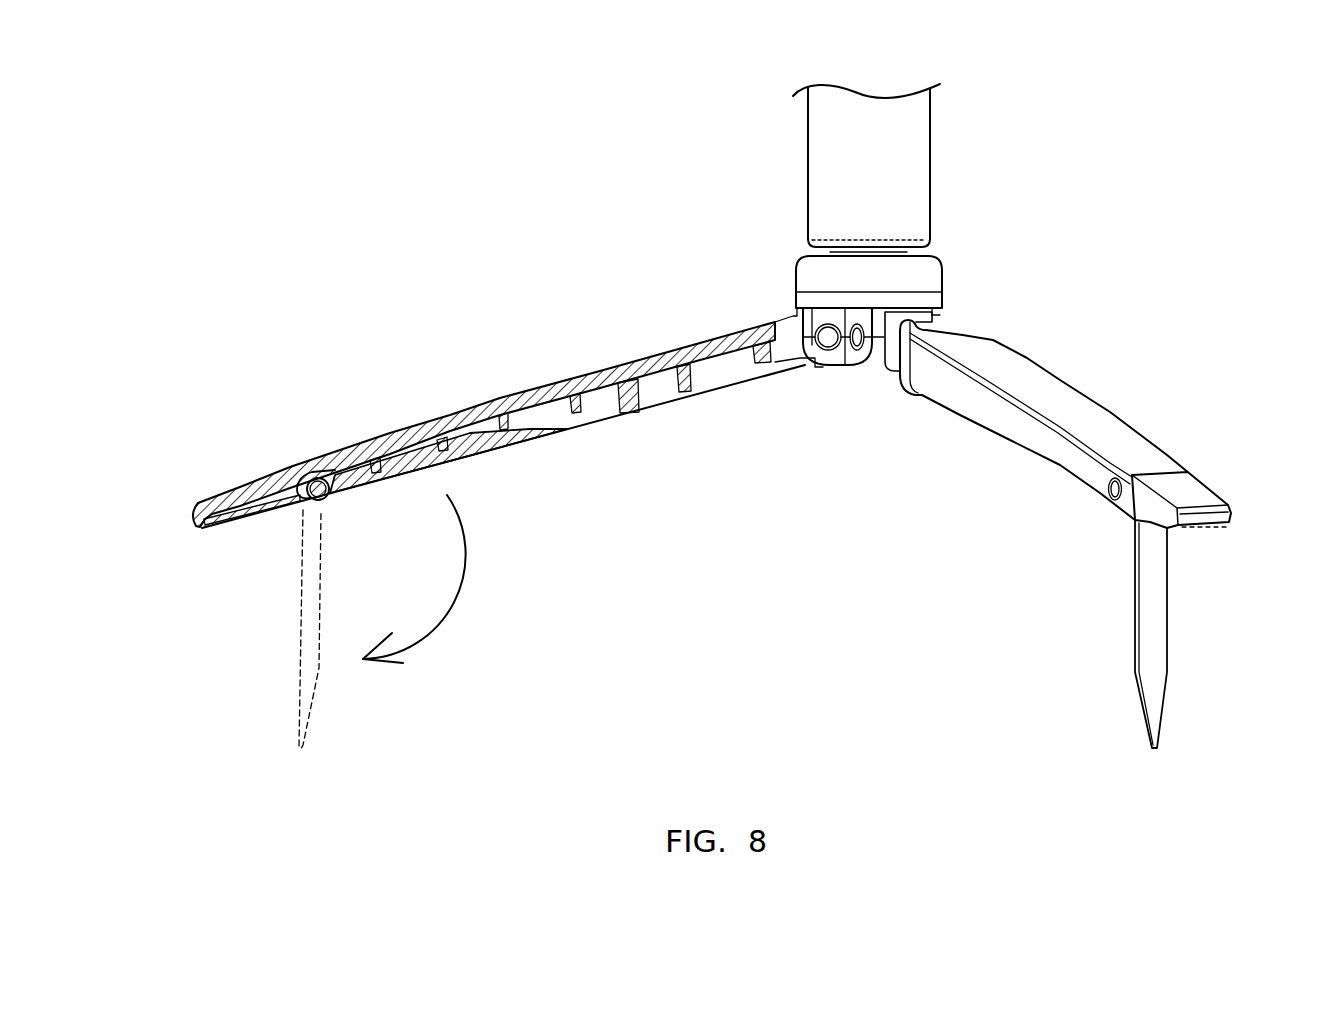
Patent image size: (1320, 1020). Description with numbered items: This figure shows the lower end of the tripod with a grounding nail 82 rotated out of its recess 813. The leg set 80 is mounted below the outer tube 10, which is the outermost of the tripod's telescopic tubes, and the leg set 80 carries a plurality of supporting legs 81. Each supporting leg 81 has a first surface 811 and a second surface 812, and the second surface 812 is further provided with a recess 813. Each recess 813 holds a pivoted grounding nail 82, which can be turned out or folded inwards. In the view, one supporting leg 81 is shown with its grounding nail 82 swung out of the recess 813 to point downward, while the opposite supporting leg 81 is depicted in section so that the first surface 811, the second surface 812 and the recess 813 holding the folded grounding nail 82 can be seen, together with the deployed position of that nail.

The outer tube 10 is at (947, 152).
The leg set 80 is at (785, 274).
The supporting leg 81 is at (663, 438).
The first surface 811 is at (411, 426).
The second surface 812 is at (653, 408).
The recess 813 is at (543, 413).
The grounding nail 82 is at (483, 457).